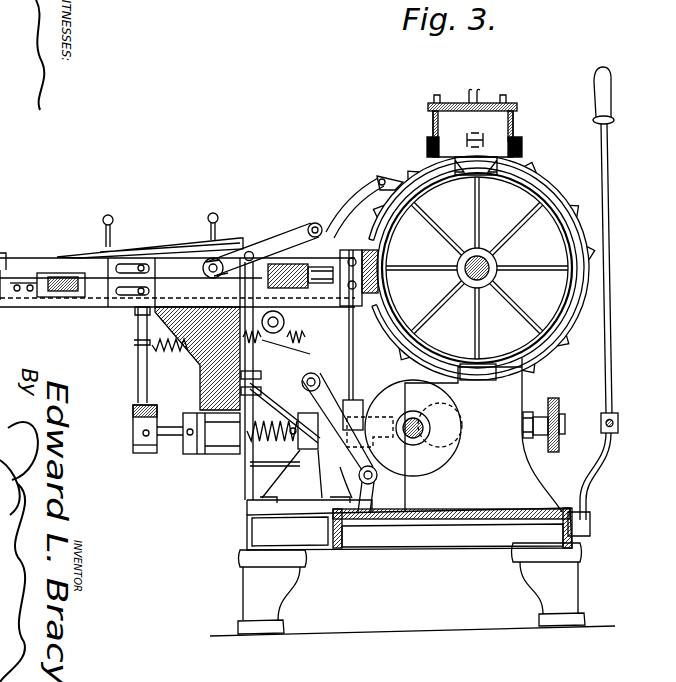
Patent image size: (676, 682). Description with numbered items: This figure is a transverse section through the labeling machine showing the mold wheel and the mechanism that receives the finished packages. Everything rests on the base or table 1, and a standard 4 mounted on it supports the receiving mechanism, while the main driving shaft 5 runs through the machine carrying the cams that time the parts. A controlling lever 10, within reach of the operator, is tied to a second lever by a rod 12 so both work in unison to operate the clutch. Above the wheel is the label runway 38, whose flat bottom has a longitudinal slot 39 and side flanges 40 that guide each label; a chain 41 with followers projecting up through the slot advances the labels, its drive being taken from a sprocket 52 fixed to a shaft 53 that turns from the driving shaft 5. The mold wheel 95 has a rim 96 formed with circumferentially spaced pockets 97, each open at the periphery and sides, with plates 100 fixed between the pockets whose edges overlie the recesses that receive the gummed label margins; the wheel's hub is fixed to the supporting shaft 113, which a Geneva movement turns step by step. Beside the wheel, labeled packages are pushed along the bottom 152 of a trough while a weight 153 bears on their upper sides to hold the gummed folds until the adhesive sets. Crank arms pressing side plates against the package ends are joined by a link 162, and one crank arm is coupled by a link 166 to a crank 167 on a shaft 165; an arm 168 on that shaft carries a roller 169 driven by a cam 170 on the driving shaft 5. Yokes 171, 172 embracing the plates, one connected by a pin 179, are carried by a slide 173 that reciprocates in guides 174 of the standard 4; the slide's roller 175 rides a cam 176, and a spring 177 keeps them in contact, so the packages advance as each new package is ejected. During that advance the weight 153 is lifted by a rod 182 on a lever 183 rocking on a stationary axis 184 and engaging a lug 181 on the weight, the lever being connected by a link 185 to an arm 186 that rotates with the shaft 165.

The base or table 1 is at (447, 513).
The standard 4 is at (170, 397).
The main driving shaft 5 is at (468, 449).
The controlling lever 10 is at (614, 335).
The rod 12 is at (620, 424).
The runway 38 is at (457, 103).
The slot 39 is at (474, 142).
The flanges 40 is at (430, 102).
The chain 41 is at (481, 93).
The sprocket 52 is at (557, 403).
The shaft 53 is at (560, 428).
The mold wheel 95 is at (477, 268).
The rim 96 is at (518, 190).
The pockets 97 is at (547, 193).
The plates 100 is at (582, 222).
The supporting shaft 113 is at (497, 266).
The bottom of trough 152 is at (63, 307).
The weight or compression device 153 is at (147, 240).
The link 162 is at (248, 284).
The shaft 165 is at (352, 345).
The link 166 is at (343, 293).
The crank 167 is at (177, 414).
The arm 168 is at (306, 449).
The roller 169 is at (369, 483).
The cam 170 is at (443, 461).
The yoke 171 is at (133, 315).
The yoke 172 is at (365, 304).
The slide 173 is at (177, 438).
The guides 174 is at (203, 456).
The roller 175 is at (358, 393).
The cam 176 is at (458, 421).
The spring 177 is at (273, 433).
The pin 179 is at (191, 266).
The lug 181 is at (325, 222).
The rod 182 is at (340, 237).
The lever 183 is at (280, 236).
The stationary axis 184 is at (223, 261).
The link 185 is at (117, 385).
The arm 186 is at (280, 399).